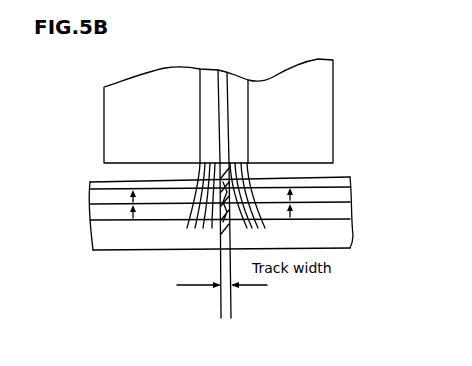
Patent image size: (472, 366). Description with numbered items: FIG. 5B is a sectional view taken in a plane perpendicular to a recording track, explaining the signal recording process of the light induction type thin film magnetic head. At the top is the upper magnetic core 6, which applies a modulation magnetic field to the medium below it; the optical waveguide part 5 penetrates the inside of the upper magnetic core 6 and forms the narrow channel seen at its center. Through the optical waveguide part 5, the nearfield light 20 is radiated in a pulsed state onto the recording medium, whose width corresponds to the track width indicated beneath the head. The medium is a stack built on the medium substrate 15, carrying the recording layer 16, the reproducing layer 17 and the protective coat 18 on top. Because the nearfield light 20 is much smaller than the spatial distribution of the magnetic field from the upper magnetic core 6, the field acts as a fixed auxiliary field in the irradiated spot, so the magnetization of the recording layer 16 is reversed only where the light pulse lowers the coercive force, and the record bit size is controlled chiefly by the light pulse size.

The optical waveguide part 5 is at (226, 75).
The upper magnetic core 6 is at (242, 85).
The medium substrate 15 is at (103, 230).
The recording layer 16 is at (103, 213).
The reproducing layer 17 is at (102, 200).
The protective coat 18 is at (103, 186).
The nearfield light 20 is at (232, 228).